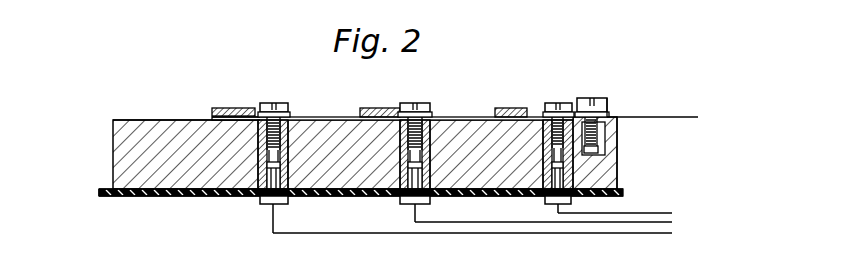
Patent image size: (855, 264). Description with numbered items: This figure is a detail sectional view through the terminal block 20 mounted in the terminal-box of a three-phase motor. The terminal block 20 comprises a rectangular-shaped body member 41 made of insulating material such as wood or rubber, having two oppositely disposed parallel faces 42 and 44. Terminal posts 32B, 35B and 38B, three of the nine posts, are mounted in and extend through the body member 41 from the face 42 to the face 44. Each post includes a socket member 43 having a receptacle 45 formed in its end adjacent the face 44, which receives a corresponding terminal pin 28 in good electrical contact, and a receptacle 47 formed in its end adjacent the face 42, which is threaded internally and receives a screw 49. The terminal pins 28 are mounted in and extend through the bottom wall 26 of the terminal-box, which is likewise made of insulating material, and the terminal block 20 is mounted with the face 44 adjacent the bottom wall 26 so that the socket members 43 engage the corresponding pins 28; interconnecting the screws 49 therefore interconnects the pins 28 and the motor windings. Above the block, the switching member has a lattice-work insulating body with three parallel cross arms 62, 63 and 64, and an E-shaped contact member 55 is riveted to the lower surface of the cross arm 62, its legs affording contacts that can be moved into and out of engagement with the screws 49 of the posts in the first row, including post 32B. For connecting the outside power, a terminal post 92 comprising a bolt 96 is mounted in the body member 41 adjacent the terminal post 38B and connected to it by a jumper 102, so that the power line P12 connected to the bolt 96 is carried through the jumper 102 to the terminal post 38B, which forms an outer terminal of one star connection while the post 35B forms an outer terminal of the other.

The terminal block 20 is at (634, 96).
The bottom wall 26 is at (99, 196).
The terminal pin 28 is at (264, 205).
The terminal post 32B is at (280, 100).
The terminal post 35B is at (412, 99).
The terminal post 38B is at (554, 99).
The body member 41 is at (113, 137).
The face 42 is at (148, 120).
The socket member 43 is at (232, 197).
The face 44 is at (146, 196).
The receptacle 45 is at (250, 197).
The receptacle 47 is at (305, 117).
The screw 49 is at (264, 105).
The contact member 55 is at (218, 117).
The cross arm 62 is at (228, 108).
The cross arm 63 is at (372, 108).
The cross arm 64 is at (498, 108).
The terminal post 92 is at (622, 102).
The bolt 96 is at (610, 93).
The jumper 102 is at (617, 127).
The power line P12 is at (685, 117).